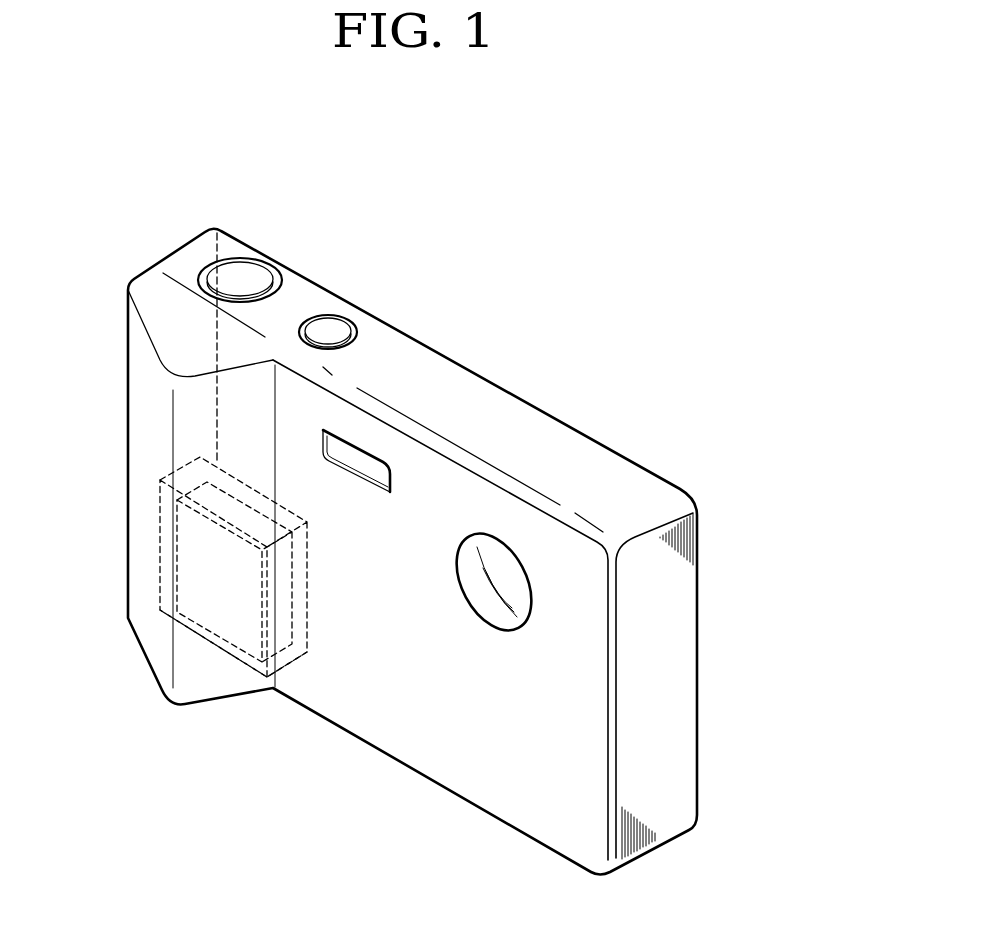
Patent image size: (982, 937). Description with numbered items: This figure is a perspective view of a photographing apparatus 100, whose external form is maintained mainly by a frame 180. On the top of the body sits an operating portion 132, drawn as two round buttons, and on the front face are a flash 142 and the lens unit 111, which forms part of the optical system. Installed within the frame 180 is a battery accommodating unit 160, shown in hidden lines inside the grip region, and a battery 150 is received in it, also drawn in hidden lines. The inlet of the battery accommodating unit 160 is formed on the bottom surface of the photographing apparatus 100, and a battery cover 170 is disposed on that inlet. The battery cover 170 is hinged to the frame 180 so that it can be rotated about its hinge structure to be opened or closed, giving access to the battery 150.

The photographing apparatus 100 is at (760, 478).
The lens unit 111 is at (495, 560).
The operating portion 132 is at (330, 323).
The flash 142 is at (355, 457).
The battery 150 is at (193, 558).
The battery accommodating unit 160 is at (158, 507).
The battery cover 170 is at (217, 647).
The frame 180 is at (412, 727).